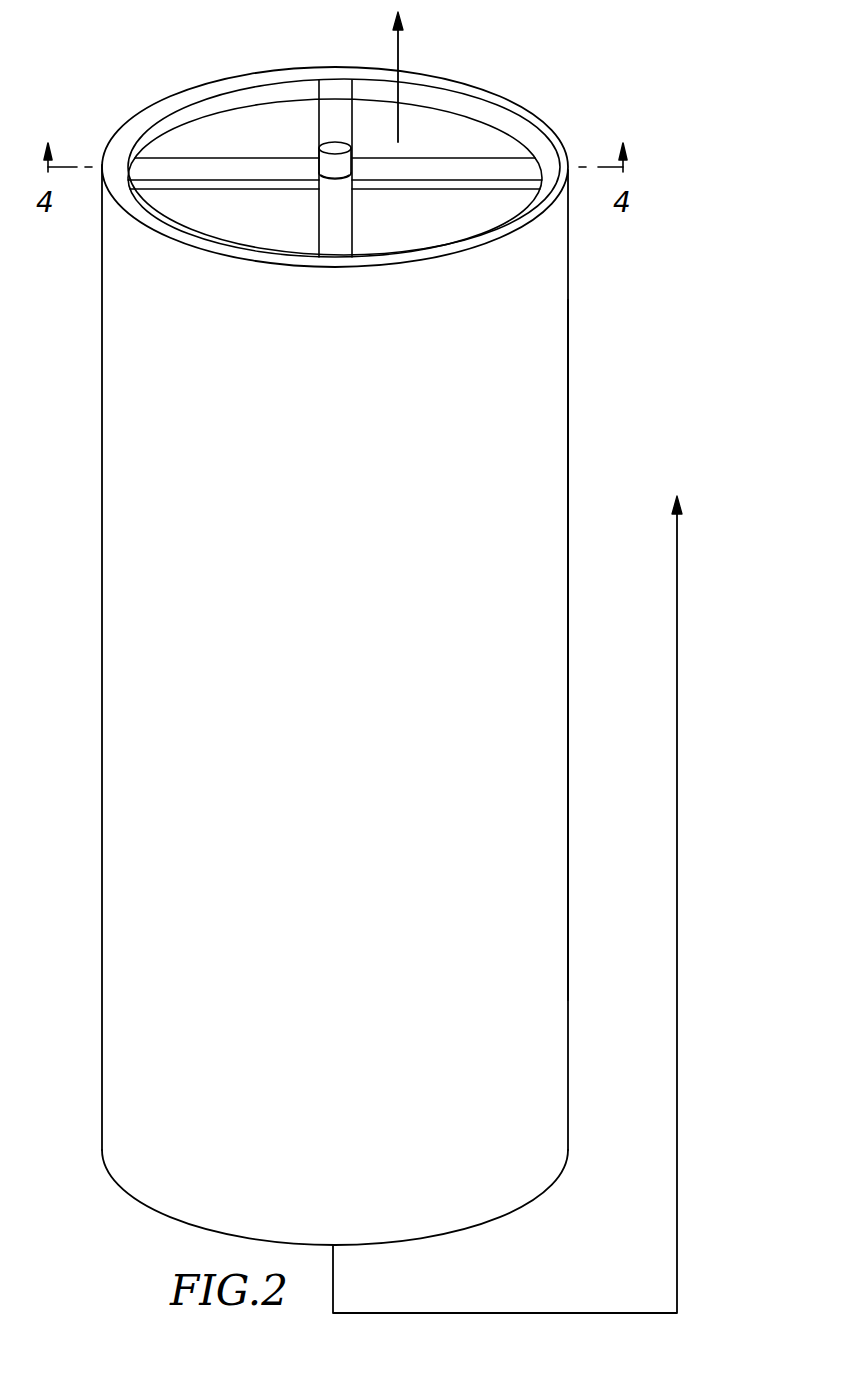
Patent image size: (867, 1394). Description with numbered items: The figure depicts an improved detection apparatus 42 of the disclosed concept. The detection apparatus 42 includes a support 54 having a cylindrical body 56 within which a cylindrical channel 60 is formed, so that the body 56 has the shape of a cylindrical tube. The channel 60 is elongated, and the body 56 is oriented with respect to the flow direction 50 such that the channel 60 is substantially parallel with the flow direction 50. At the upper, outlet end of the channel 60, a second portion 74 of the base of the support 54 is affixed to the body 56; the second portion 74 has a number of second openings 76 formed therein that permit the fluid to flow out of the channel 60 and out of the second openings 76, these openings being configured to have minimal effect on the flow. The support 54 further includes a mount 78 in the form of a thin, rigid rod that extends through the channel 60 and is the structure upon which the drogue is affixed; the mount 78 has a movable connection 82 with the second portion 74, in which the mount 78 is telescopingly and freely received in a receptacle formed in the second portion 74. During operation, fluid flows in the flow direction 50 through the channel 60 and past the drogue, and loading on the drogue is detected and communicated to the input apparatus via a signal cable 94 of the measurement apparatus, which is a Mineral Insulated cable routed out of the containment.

The detection apparatus 42 is at (612, 310).
The flow direction 50 is at (399, 56).
The support 54 is at (569, 278).
The cylindrical body 56 is at (569, 389).
The cylindrical channel 60 is at (470, 139).
The second portion 74 is at (173, 165).
The second openings 76 is at (230, 147).
The mount 78 is at (333, 146).
The movable connection 82 is at (338, 179).
The signal cable 94 is at (678, 623).